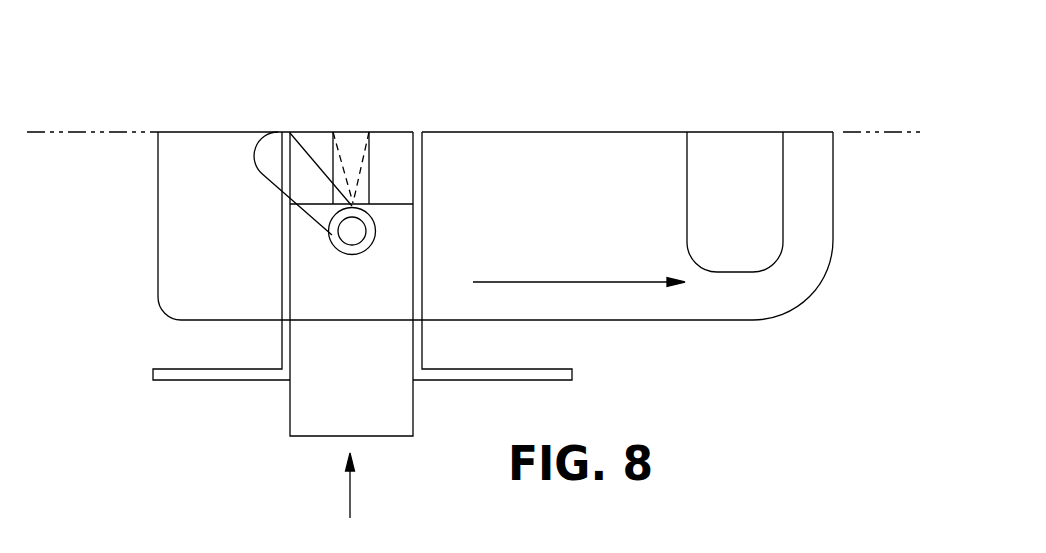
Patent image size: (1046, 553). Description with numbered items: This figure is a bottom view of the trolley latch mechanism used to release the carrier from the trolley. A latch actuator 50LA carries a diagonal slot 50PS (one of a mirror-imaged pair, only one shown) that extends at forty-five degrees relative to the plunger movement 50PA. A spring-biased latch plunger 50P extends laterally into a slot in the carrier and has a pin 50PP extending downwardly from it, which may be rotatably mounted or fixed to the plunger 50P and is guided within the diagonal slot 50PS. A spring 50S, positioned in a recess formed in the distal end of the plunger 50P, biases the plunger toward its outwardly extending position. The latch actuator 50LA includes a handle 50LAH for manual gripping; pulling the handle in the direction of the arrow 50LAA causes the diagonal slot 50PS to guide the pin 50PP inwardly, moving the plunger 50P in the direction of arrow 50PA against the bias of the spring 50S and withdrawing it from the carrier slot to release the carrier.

The latch plunger 50P is at (370, 383).
The pin 50PP is at (352, 231).
The diagonal slot 50PS is at (318, 166).
The spring 50S is at (352, 165).
The plunger movement arrow 50PA is at (348, 487).
The latch actuator 50LA is at (558, 227).
The latch actuator pulling arrow 50LAA is at (597, 282).
The handle 50LAH is at (813, 225).